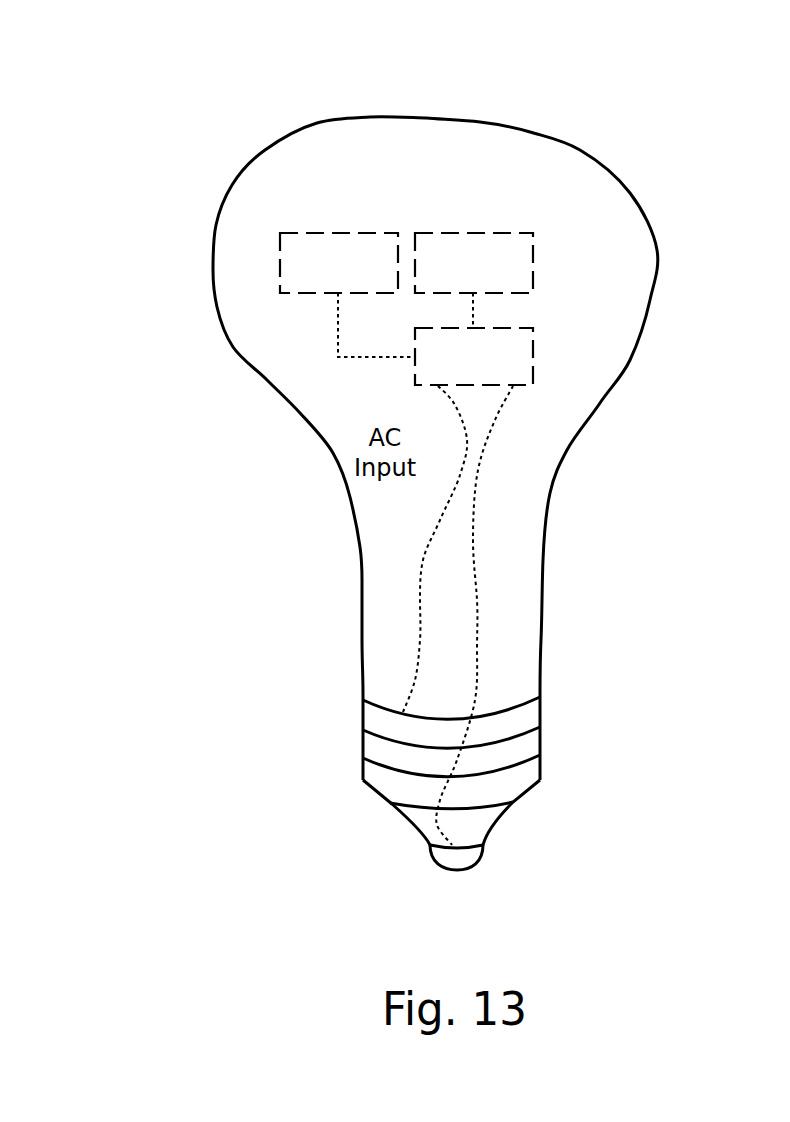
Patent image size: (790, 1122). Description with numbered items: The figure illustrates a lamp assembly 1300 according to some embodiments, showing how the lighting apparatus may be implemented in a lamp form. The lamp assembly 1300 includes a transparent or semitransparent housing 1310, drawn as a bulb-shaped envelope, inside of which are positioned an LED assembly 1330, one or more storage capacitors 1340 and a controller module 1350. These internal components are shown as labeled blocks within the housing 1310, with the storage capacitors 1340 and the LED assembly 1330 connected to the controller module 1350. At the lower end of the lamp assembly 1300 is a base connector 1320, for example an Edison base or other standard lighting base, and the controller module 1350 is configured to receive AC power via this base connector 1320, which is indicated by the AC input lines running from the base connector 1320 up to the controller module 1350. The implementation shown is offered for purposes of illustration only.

The lamp assembly 1300 is at (200, 79).
The housing 1310 is at (397, 118).
The base connector 1320 is at (513, 802).
The LED assembly 1330 is at (533, 260).
The storage capacitors 1340 is at (280, 263).
The controller module 1350 is at (533, 353).